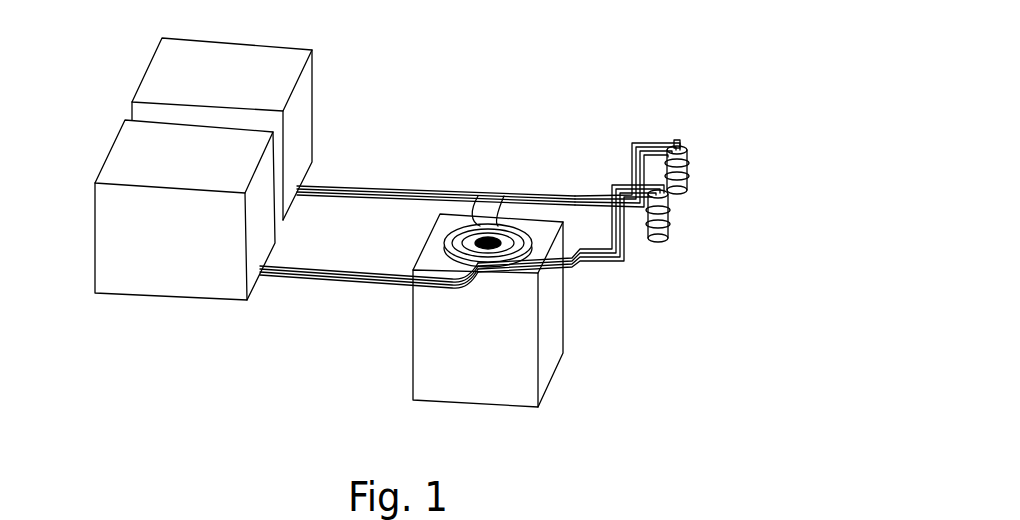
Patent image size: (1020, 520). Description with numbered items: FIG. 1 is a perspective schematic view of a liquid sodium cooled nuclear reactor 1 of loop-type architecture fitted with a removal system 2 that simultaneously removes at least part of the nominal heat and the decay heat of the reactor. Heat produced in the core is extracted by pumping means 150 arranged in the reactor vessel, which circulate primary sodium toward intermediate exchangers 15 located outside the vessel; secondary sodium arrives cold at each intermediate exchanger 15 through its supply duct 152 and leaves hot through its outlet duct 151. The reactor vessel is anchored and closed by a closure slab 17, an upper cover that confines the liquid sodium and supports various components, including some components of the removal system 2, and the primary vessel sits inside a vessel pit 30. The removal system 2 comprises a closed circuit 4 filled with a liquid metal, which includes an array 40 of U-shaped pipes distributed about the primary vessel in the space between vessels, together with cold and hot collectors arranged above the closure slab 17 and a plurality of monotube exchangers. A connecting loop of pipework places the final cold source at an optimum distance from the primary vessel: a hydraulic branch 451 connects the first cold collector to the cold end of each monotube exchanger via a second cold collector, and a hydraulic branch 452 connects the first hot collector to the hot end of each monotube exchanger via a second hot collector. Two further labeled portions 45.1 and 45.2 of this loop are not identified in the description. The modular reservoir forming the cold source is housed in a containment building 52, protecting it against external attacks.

The liquid sodium cooled nuclear reactor 1 is at (544, 86).
The removal system 2 is at (463, 148).
The closed circuit 4 is at (272, 296).
The intermediate exchanger 15 is at (690, 165).
The closure slab 17 is at (545, 280).
The vessel pit 30 is at (476, 378).
The array of U-shaped pipes 40 is at (445, 238).
The first conductor strip 45.1 is at (382, 368).
The second conductor strip 45.2 is at (443, 113).
The hydraulic branch 451 is at (340, 184).
The hydraulic branch 452 is at (400, 187).
The containment building 52 is at (163, 65).
The pumping means 150 is at (633, 160).
The outlet duct 151 is at (533, 188).
The supply duct 152 is at (637, 167).